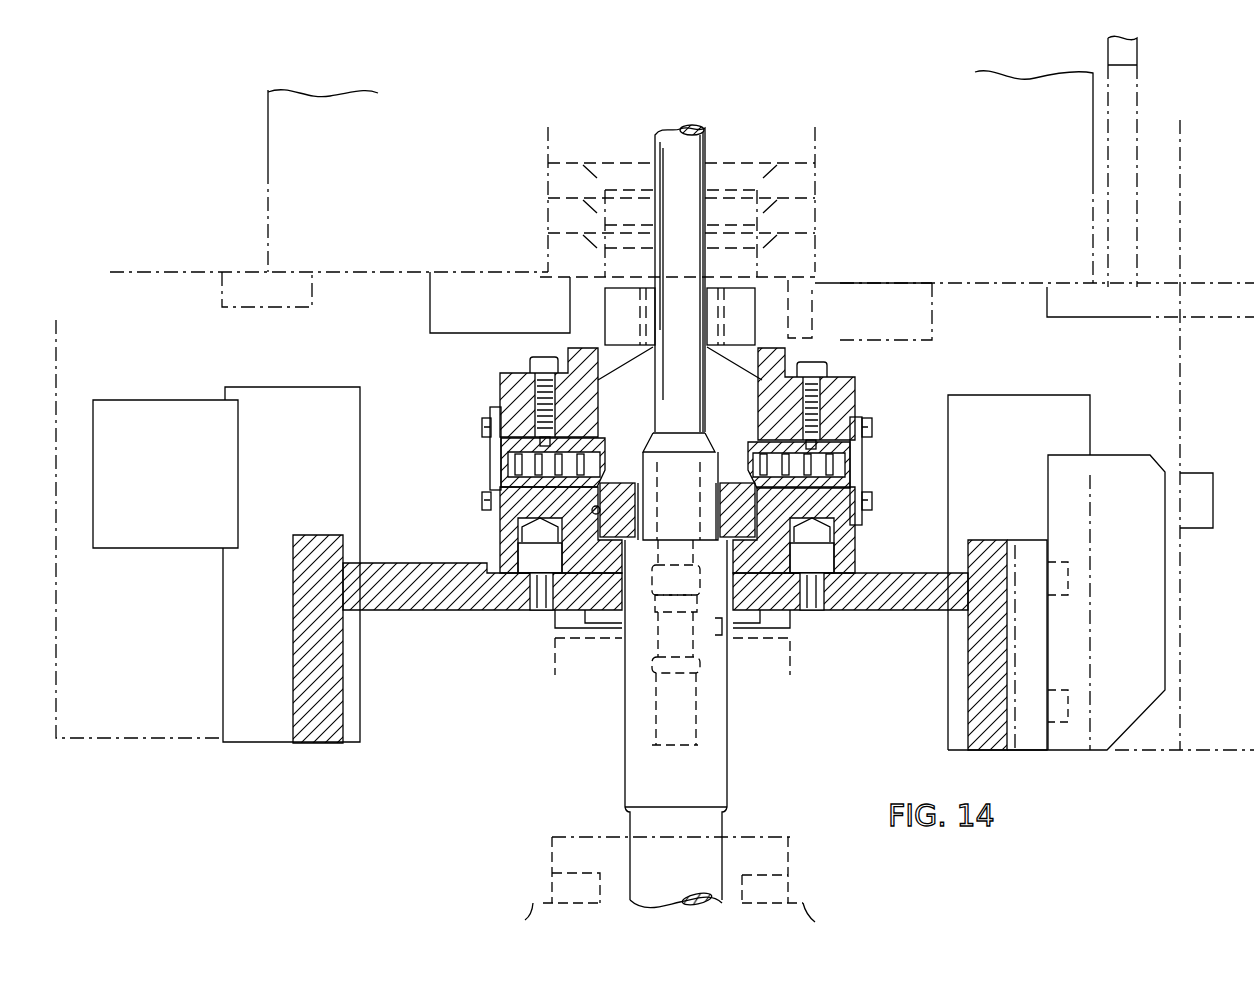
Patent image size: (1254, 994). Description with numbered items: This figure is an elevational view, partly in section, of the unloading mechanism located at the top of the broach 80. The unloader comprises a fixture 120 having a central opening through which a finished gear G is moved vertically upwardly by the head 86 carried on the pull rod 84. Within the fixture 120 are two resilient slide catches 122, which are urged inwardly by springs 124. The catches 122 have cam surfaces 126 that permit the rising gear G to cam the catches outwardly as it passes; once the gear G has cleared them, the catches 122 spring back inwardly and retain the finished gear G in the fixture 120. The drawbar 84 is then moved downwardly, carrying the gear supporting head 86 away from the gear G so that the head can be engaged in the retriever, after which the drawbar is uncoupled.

The broach 80 is at (405, 540).
The pull rod 84 is at (707, 137).
The head 86 is at (624, 692).
The fixture 120 is at (495, 410).
The resilient slide catches 122 is at (817, 490).
The springs 124 is at (850, 466).
The cam surfaces 126 is at (745, 472).
The finished gear G is at (620, 487).